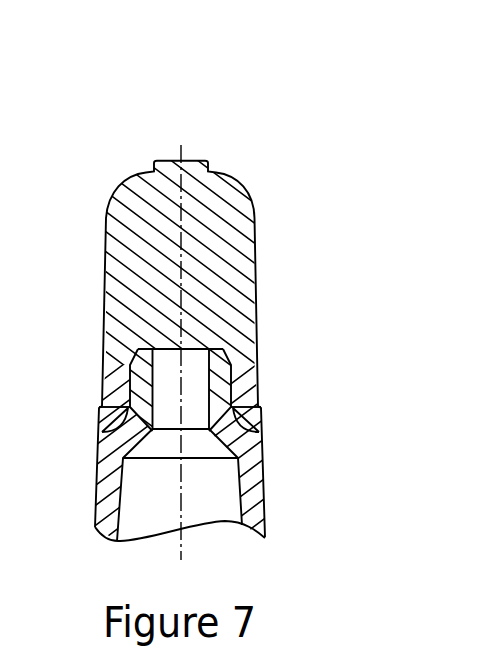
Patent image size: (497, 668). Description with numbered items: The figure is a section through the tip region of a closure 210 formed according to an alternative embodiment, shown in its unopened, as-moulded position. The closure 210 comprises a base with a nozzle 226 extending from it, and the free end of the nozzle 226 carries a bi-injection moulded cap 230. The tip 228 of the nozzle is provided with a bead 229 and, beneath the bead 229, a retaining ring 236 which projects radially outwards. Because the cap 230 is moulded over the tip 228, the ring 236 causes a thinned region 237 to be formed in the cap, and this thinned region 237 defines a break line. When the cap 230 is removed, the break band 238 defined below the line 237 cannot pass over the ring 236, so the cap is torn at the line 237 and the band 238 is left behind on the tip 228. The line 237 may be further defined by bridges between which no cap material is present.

The closure 210 is at (403, 90).
The cap 230 is at (105, 242).
The bead 229 is at (126, 368).
The tip 228 is at (236, 353).
The retaining ring 236 is at (102, 407).
The thinned region 237 is at (266, 408).
The break band 238 is at (258, 420).
The nozzle 226 is at (99, 451).